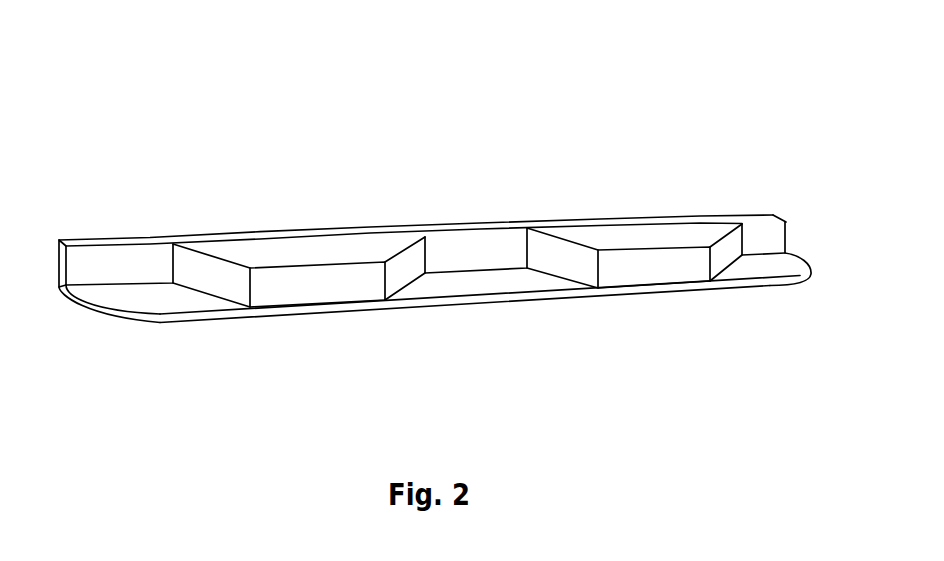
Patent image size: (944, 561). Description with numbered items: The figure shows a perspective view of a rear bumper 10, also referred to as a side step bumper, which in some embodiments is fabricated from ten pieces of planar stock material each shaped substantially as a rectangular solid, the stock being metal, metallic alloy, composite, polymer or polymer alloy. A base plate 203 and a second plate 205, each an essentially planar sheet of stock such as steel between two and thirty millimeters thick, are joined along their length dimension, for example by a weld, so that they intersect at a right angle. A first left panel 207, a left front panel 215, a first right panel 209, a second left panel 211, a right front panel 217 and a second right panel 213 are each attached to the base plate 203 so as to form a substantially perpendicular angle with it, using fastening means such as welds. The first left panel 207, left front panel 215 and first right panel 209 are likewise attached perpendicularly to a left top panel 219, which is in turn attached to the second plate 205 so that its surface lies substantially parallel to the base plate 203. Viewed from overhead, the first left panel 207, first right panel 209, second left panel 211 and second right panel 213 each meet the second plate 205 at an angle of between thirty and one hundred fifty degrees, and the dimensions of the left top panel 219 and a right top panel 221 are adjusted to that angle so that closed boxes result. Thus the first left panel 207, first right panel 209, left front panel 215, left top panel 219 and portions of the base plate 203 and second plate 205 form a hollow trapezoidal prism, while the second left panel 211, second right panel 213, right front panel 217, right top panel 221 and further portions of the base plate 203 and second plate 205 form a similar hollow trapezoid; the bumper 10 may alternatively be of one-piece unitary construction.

The rear bumper 10 is at (419, 129).
The base plate 203 is at (150, 295).
The second plate 205 is at (127, 260).
The first left panel 207 is at (210, 273).
The first right panel 209 is at (400, 270).
The second left panel 211 is at (570, 263).
The second right panel 213 is at (722, 253).
The left front panel 215 is at (330, 283).
The right front panel 217 is at (653, 272).
The left top panel 219 is at (305, 253).
The right top panel 221 is at (632, 243).